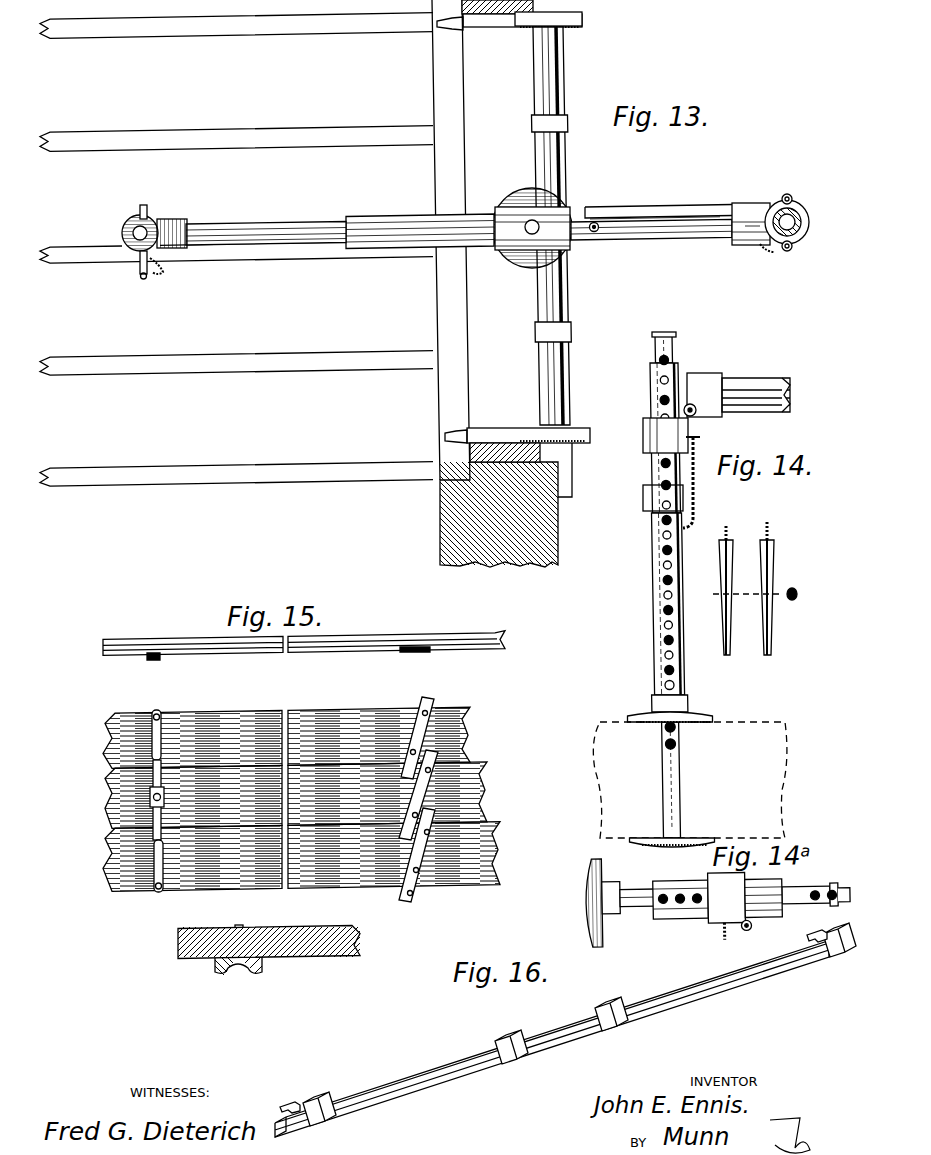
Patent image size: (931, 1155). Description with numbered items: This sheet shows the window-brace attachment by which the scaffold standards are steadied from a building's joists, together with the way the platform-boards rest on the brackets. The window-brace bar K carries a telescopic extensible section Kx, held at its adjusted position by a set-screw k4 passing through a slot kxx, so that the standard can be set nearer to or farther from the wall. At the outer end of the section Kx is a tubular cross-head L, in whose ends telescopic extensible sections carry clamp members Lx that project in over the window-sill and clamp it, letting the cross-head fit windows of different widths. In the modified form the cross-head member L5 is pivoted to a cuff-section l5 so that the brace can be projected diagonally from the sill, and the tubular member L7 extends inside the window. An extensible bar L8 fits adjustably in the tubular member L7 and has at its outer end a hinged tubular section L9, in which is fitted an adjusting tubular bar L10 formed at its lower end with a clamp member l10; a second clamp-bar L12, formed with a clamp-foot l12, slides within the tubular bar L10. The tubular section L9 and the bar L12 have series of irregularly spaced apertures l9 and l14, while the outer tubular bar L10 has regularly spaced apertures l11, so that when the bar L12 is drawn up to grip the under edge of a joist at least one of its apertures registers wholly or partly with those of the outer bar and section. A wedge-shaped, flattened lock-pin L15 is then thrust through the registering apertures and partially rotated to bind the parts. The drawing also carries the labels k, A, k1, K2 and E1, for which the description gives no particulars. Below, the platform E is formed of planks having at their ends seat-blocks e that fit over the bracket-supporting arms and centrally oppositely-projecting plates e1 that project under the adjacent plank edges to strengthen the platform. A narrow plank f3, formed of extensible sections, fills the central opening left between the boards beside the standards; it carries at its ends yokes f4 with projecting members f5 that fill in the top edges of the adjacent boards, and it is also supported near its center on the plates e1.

In FIG. 13, the tubular cross-head L is at (562, 270).
In FIG. 13, the clamp members Lx is at (478, 433).
In FIG. 14, the clamp members Lx is at (771, 640).
In FIG. 13, the cross-head member L5 is at (553, 56).
In FIG. 13, the cuff-section l5 is at (528, 238).
In FIG. 13, the tubular member L7 is at (387, 223).
In FIG. 13, the extensible bar L8 is at (259, 228).
In FIG. 14, the extensible bar L8 is at (752, 382).
In FIG. 14A, the extensible bar L8 is at (755, 905).
In FIG. 13, the hinged tubular section L9 is at (148, 214).
In FIG. 14, the hinged tubular section L9 is at (660, 468).
In FIG. 14A, the hinged tubular section L9 is at (681, 911).
In FIG. 13, the clamp member l10 is at (142, 233).
In FIG. 14, the clamp member l10 is at (655, 716).
In FIG. 14A, the clamp member l10 is at (606, 878).
In FIG. 14, the adjusting tubular bar L10 is at (683, 617).
In FIG. 14A, the adjusting tubular bar L10 is at (636, 906).
In FIG. 13, the clamp-bar L12 is at (133, 248).
In FIG. 14, the clamp-bar L12 is at (617, 343).
In FIG. 14A, the clamp-bar L12 is at (835, 904).
In FIG. 14, the clamp-foot l12 is at (681, 838).
In FIG. 14A, the clamp-foot l12 is at (576, 903).
In FIG. 14, the irregularly spaced apertures l14 is at (669, 360).
In FIG. 14, the lock-pin L15 is at (655, 513).
In FIG. 14, the irregularly spaced apertures l9 is at (660, 488).
In FIG. 14, the regularly spaced apertures l11 is at (675, 686).
In FIG. 13, the rod k is at (774, 208).
In FIG. 13, the telescopic extensible section Kx is at (640, 212).
In FIG. 13, the slot kxx is at (668, 232).
In FIG. 13, the set-screw k4 is at (596, 221).
In FIG. 13, the bar K is at (745, 245).
In FIG. 13, the plate A is at (798, 208).
In FIG. 13, the bearing ring (k prime) k1 is at (806, 226).
In FIG. 13, the lug K2 is at (787, 252).
In FIG. 15, the platform E is at (296, 930).
In FIG. 15, the slat (E prime) E1 is at (250, 650).
In FIG. 15, the seat-blocks e is at (168, 745).
In FIG. 15, the oppositely-projecting plates e1 is at (410, 653).
In FIG. 16, the narrow plank f3 is at (598, 1035).
In FIG. 16, the yokes f4 is at (317, 1127).
In FIG. 16, the projecting members f5 is at (280, 1108).